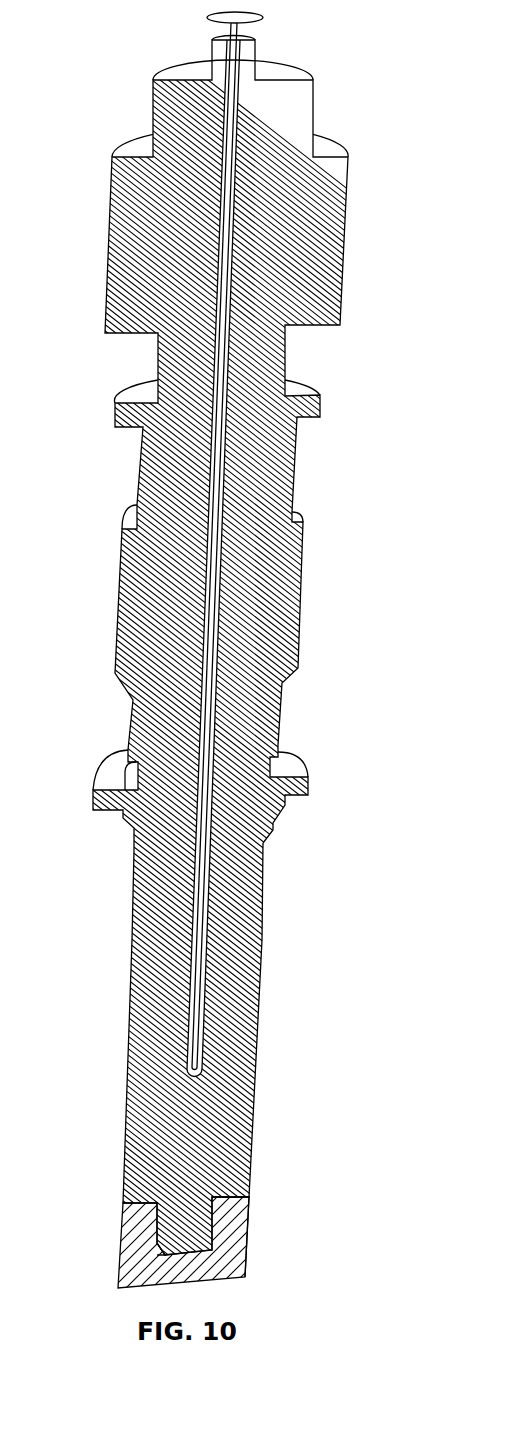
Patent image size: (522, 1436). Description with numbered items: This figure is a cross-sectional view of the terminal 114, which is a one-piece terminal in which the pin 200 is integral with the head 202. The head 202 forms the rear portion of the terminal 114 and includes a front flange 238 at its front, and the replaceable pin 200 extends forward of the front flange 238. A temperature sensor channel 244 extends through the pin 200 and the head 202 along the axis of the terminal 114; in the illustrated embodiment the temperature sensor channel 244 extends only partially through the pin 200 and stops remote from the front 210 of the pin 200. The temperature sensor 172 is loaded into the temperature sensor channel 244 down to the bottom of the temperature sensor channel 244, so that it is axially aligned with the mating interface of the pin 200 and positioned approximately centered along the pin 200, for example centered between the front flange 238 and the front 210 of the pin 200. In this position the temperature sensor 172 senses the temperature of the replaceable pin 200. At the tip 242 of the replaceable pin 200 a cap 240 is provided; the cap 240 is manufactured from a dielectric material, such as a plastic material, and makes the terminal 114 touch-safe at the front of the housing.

The terminal 114 is at (347, 101).
The temperature sensor channel 244 is at (217, 333).
The head 202 is at (290, 602).
The front flange 238 is at (98, 797).
The pin 200 is at (256, 972).
The temperature sensor 172 is at (193, 1076).
The cap 240 is at (236, 1239).
The front of the pin 210 is at (217, 1281).
The tip of the replaceable pin 242 is at (184, 1257).